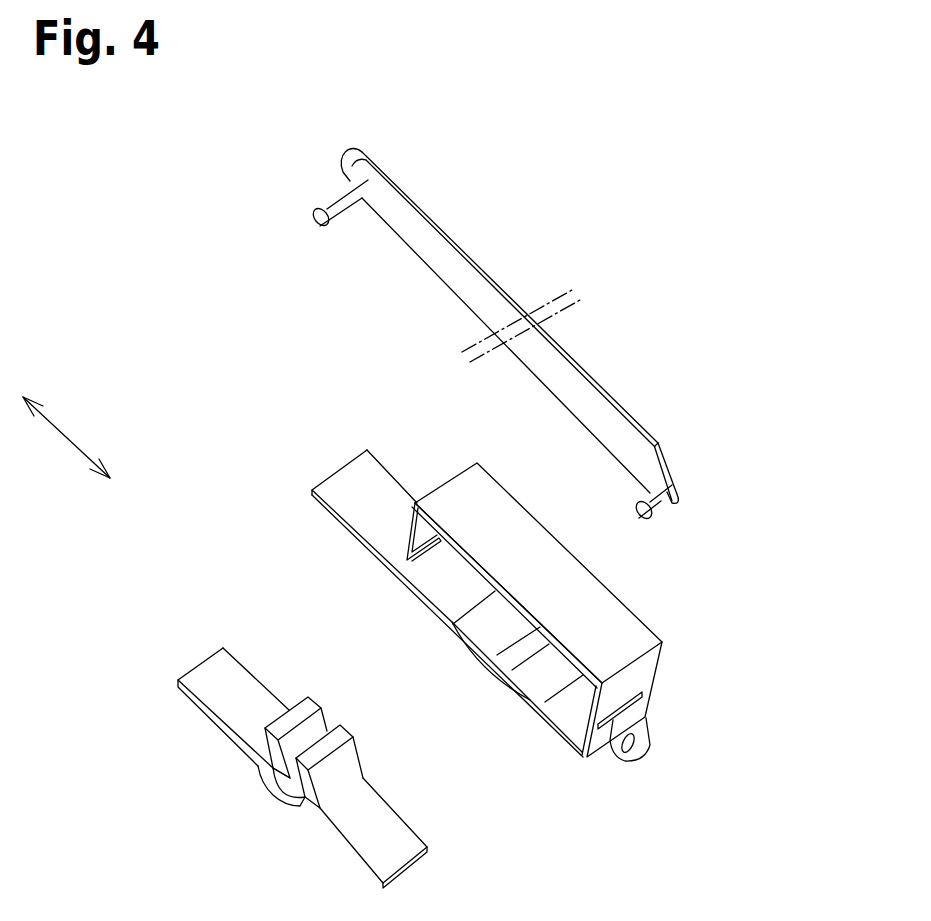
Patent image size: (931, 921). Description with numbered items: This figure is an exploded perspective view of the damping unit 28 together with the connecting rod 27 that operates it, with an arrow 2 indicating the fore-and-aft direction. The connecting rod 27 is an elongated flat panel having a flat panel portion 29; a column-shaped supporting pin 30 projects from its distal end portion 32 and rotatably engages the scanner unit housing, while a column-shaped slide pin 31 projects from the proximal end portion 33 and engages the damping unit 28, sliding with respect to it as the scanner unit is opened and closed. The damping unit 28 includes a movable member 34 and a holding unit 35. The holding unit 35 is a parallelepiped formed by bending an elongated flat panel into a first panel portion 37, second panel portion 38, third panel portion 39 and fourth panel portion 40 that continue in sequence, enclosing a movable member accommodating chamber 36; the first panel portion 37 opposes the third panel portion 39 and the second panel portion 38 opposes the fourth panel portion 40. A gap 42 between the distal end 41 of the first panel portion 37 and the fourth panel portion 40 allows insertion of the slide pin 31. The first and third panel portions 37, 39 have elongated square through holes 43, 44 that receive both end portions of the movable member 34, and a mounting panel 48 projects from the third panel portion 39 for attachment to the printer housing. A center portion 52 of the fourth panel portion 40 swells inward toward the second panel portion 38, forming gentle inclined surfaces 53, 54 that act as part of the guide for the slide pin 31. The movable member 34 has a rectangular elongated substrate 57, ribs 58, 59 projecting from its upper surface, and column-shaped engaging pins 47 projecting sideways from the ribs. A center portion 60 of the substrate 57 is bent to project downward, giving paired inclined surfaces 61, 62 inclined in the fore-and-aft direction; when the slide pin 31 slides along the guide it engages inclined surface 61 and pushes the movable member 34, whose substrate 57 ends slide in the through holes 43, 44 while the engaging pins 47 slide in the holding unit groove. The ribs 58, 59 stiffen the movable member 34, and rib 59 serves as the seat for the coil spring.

The arrow 2 is at (60, 427).
The connecting rod 27 is at (480, 351).
The damping unit 28 is at (556, 605).
The flat panel portion 29 is at (455, 285).
The supporting pin 30 is at (312, 220).
The slide pin 31 is at (652, 516).
The distal end portion 32 is at (398, 179).
The proximal end portion 33 is at (672, 447).
The movable member 34 is at (340, 768).
The holding unit 35 is at (452, 465).
The movable member accommodating chamber 36 is at (573, 710).
The first panel portion 37 is at (376, 541).
The second panel portion 38 is at (533, 533).
The third panel portion 39 is at (653, 736).
The fourth panel portion 40 is at (447, 625).
The distal end 41 is at (452, 558).
The gap 42 is at (407, 562).
The through hole 43 is at (440, 550).
The through hole 44 is at (648, 717).
The engaging pins 47 is at (330, 712).
The mounting panel 48 is at (648, 760).
The center portion 52 is at (500, 667).
The inclined surface 53 is at (453, 620).
The inclined surface 54 is at (528, 670).
The substrate 57 is at (413, 865).
The rib 58 is at (277, 712).
The rib 59 is at (323, 778).
The center portion 60 is at (270, 802).
The inclined surface 61 is at (268, 783).
The inclined surface 62 is at (288, 808).